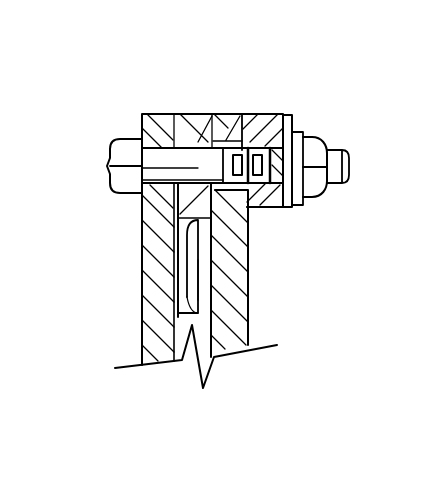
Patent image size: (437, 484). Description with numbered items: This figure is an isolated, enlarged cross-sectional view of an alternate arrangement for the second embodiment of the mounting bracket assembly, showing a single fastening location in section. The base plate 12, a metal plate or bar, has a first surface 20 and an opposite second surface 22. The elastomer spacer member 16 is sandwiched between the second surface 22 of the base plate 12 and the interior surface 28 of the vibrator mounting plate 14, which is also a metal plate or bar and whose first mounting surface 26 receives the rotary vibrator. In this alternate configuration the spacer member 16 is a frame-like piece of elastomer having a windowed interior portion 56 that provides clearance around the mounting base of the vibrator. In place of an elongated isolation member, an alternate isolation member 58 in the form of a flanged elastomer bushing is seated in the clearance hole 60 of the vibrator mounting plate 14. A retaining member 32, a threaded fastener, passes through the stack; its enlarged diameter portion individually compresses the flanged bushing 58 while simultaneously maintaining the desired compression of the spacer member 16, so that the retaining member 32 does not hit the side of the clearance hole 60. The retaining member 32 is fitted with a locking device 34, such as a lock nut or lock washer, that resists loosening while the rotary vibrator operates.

The base plate 12 is at (148, 112).
The vibrator mounting plate 14 is at (235, 112).
The spacer member 16 is at (192, 97).
The first surface 20 is at (142, 267).
The second surface 22 is at (142, 315).
The first mounting surface 26 is at (248, 253).
The interior surface 28 is at (198, 288).
The retaining member 32 is at (108, 166).
The locking device 34 is at (323, 125).
The windowed interior portion 56 is at (185, 228).
The alternate isolation member 58 is at (265, 112).
The clearance hole 60 is at (217, 112).